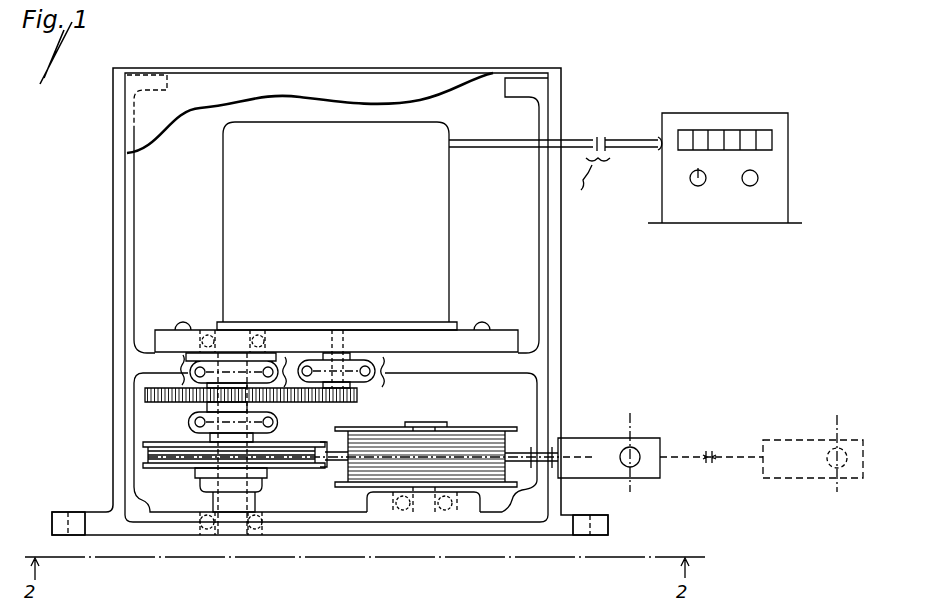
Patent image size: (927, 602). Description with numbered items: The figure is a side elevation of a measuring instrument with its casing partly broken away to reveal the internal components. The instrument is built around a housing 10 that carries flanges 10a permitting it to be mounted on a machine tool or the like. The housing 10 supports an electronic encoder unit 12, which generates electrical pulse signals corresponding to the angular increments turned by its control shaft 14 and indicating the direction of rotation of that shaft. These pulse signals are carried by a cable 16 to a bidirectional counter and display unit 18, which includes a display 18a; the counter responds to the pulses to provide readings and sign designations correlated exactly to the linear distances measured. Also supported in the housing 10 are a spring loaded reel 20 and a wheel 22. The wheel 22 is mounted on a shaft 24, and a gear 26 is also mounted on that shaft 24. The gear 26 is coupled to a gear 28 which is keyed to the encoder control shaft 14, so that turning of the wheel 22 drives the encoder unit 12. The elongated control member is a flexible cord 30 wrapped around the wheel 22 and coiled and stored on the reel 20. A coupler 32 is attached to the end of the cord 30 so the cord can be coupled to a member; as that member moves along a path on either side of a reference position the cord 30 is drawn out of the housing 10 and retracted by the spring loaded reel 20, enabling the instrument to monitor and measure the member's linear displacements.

The housing 10 is at (118, 307).
The flanges 10a is at (63, 514).
The electronic encoder unit 12 is at (430, 252).
The control shaft 14 is at (343, 345).
The cable 16 is at (610, 140).
The bidirectional counter and display unit 18 is at (723, 113).
The display 18a is at (742, 141).
The spring loaded reel 20 is at (470, 425).
The wheel 22 is at (135, 437).
The shaft 24 is at (235, 517).
The gear 26 is at (135, 398).
The gear 28 is at (353, 398).
The flexible cord 30 is at (515, 452).
The coupler 32 is at (605, 445).